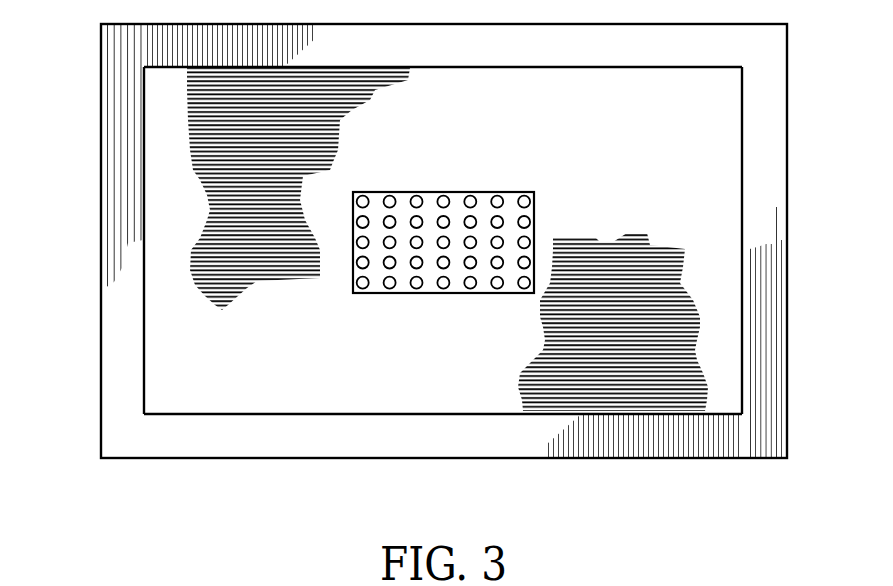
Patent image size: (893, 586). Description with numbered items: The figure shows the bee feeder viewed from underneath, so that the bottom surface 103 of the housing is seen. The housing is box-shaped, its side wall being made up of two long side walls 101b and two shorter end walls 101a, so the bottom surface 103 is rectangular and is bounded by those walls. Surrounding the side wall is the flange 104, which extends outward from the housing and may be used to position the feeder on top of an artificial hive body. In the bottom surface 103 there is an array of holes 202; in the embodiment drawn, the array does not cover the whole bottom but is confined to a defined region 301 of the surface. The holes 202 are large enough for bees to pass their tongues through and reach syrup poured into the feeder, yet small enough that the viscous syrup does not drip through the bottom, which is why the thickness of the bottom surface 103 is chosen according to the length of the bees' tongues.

The end wall 101a is at (145, 350).
The long side wall 101b is at (467, 414).
The bottom surface 103 is at (727, 193).
The flange 104 is at (100, 276).
The defined region 301 is at (405, 272).
The holes 202 is at (443, 263).